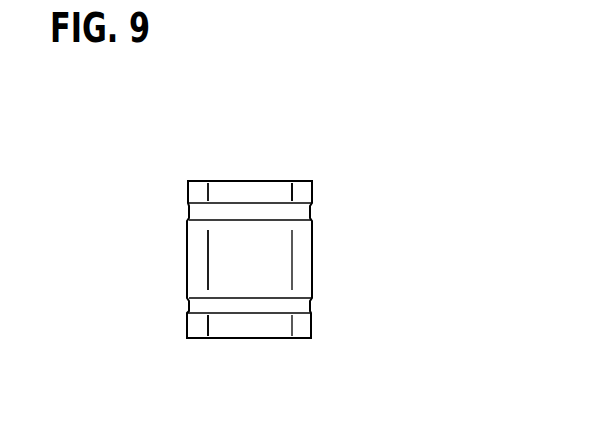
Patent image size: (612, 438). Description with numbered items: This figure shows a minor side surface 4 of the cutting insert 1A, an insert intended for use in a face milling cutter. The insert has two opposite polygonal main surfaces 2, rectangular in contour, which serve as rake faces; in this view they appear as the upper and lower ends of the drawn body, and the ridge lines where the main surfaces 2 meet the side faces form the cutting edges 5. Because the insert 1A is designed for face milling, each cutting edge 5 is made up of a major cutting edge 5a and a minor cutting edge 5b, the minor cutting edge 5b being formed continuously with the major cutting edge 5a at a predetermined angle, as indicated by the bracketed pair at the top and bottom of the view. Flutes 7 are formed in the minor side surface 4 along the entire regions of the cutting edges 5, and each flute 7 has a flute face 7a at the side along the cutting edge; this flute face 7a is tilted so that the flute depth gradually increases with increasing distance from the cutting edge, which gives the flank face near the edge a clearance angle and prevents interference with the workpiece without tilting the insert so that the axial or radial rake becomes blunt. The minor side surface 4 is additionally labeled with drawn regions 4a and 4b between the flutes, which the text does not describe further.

The cutting insert 1A is at (318, 265).
The main surface 2 is at (247, 180).
The minor side surface 4 is at (97, 214).
The inner layer 4a is at (237, 278).
The outer layer 4b is at (194, 242).
The cutting edge 5 is at (297, 120).
The major cutting edge 5a is at (312, 181).
The minor cutting edge 5b is at (300, 182).
The flute 7 is at (312, 200).
The flute face 7a is at (220, 190).